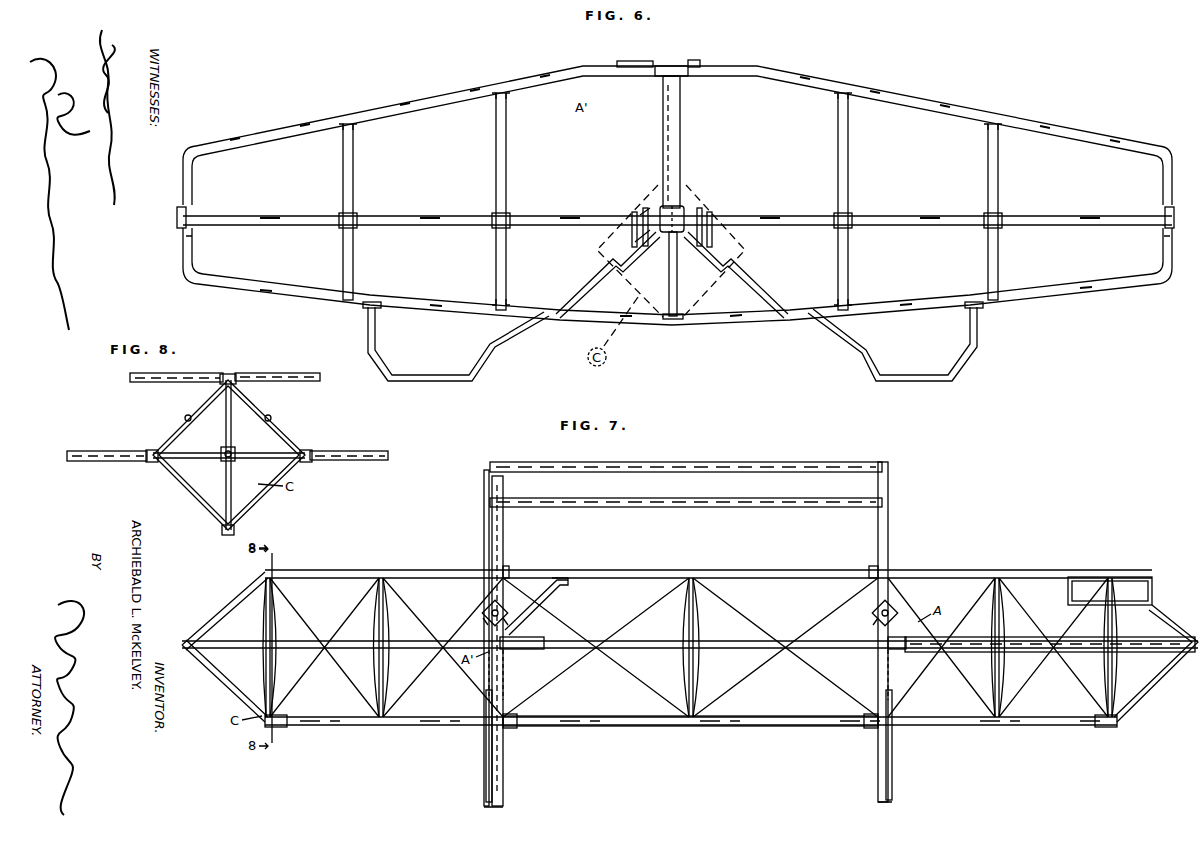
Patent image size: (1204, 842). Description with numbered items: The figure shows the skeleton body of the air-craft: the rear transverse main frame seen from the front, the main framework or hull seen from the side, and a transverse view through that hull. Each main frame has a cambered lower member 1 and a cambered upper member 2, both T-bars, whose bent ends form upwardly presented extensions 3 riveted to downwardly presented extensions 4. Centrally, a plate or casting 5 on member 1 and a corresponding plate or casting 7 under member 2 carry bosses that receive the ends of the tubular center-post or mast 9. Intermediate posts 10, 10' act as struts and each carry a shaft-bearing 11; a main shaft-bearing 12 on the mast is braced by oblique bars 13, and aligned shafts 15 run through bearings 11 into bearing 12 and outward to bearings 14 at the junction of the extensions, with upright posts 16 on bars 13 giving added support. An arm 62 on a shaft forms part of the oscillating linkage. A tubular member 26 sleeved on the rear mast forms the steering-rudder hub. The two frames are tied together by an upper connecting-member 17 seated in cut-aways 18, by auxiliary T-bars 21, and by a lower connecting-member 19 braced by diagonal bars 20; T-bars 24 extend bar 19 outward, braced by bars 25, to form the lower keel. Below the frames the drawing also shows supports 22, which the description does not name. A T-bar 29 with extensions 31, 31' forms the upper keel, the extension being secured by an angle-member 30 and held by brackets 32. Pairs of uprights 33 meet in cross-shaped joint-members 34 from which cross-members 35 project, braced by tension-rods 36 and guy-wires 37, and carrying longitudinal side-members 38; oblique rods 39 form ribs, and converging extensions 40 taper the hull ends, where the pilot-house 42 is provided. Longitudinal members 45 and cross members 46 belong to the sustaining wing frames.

In FIG. 6, the lower member 1 is at (418, 303).
In FIG. 7, the lower member 1 is at (502, 702).
In FIG. 6, the upper member 2 is at (414, 108).
In FIG. 7, the upper member 2 is at (877, 482).
In FIG. 6, the upwardly presented extensions 3 is at (196, 264).
In FIG. 7, the upwardly presented extensions 3 is at (505, 659).
In FIG. 6, the downwardly presented extensions 4 is at (186, 196).
In FIG. 7, the downwardly presented extensions 4 is at (508, 571).
In FIG. 6, the plate or casting 5 is at (672, 322).
In FIG. 6, the plate or casting 7 is at (660, 80).
In FIG. 6, the center-post or mast 9 is at (679, 282).
In FIG. 6, the intermediate post or shaft-support 10 is at (672, 201).
In FIG. 6, the intermediate post or shaft-support 10' is at (670, 212).
In FIG. 6, the shaft-bearing 11 is at (356, 218).
In FIG. 6, the main shaft-bearing 12 is at (685, 212).
In FIG. 7, the main shaft-bearing 12 is at (490, 606).
In FIG. 6, the diagonal or oblique members or bars 13 is at (578, 292).
In FIG. 6, the bearing 14 is at (190, 216).
In FIG. 7, the bearing 14 is at (506, 618).
In FIG. 6, the alining shaft 15 is at (442, 216).
In FIG. 7, the alining shaft 15 is at (528, 637).
In FIG. 6, the upright bearing-member or post 16 is at (630, 232).
In FIG. 6, the upper main longitudinal connecting-member 17 is at (688, 66).
In FIG. 7, the upper main longitudinal connecting-member 17 is at (725, 472).
In FIG. 6, the cut-away seat 18 is at (655, 65).
In FIG. 7, the lower main longitudinal connecting-member 19 is at (617, 727).
In FIG. 7, the diagonal or brace-bar 20 is at (530, 727).
In FIG. 7, the auxiliary longitudinal T-bar 21 is at (778, 498).
In FIG. 6, the leg / support 22 is at (450, 381).
In FIG. 7, the leg / support 22 is at (505, 797).
In FIG. 8, the T-bar 24 is at (228, 535).
In FIG. 7, the T-bar 24 is at (226, 538).
In FIG. 7, the diagonally disposed brace-bar 25 is at (464, 727).
In FIG. 6, the tubular member 26 is at (682, 158).
In FIG. 7, the tubular member 26 is at (491, 546).
In FIG. 7, the T-bar 29 is at (732, 570).
In FIG. 8, the angle-member 30 is at (151, 463).
In FIG. 8, the T-bar extension 31 is at (220, 395).
In FIG. 7, the T-bar extension 31 is at (384, 560).
In FIG. 7, the T-bar extension 31' is at (1015, 560).
In FIG. 7, the bracket 32 is at (552, 601).
In FIG. 8, the vertically-disposed strut-member 33 is at (226, 431).
In FIG. 7, the vertically-disposed strut-member 33 is at (382, 619).
In FIG. 8, the cross-shaped joint-member 34 is at (236, 452).
In FIG. 8, the hull cross-member 35 is at (196, 458).
In FIG. 7, the strut-supported tension-rod 36 is at (392, 632).
In FIG. 7, the diagonally disposed stay- or guy-wire 37 is at (410, 676).
In FIG. 7, the longitudinal hull side-member or bar 38 is at (360, 660).
In FIG. 8, the obliquely disposed wire, bar, or rod 39 is at (168, 418).
In FIG. 7, the converging extension 40 is at (215, 617).
In FIG. 7, the pilot-house 42 is at (1110, 591).
In FIG. 8, the longitudinal member 45 is at (138, 378).
In FIG. 8, the cross member 46 is at (186, 415).
In FIG. 6, the second arm 62 is at (665, 240).